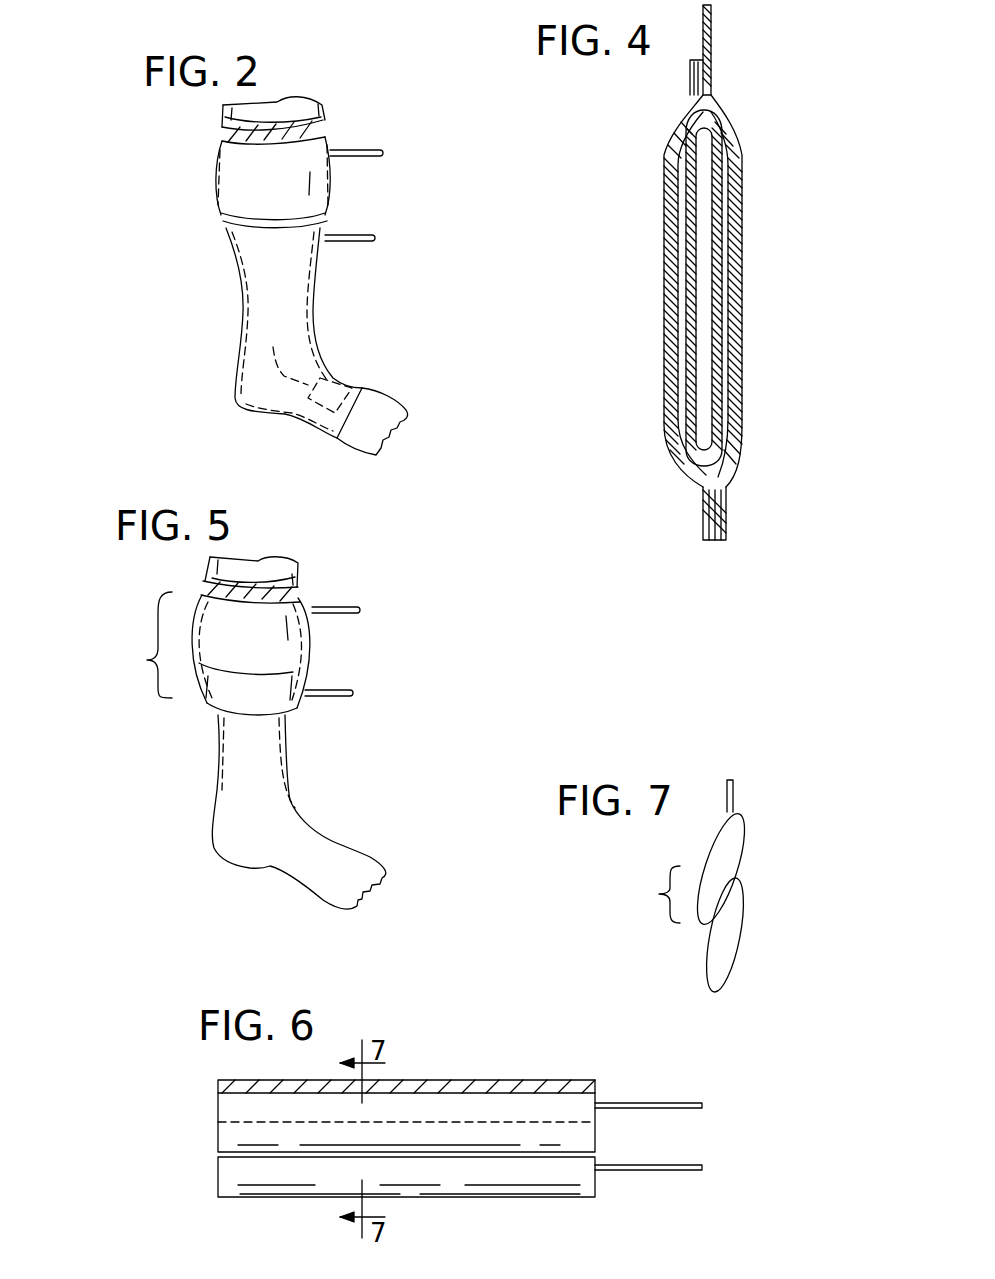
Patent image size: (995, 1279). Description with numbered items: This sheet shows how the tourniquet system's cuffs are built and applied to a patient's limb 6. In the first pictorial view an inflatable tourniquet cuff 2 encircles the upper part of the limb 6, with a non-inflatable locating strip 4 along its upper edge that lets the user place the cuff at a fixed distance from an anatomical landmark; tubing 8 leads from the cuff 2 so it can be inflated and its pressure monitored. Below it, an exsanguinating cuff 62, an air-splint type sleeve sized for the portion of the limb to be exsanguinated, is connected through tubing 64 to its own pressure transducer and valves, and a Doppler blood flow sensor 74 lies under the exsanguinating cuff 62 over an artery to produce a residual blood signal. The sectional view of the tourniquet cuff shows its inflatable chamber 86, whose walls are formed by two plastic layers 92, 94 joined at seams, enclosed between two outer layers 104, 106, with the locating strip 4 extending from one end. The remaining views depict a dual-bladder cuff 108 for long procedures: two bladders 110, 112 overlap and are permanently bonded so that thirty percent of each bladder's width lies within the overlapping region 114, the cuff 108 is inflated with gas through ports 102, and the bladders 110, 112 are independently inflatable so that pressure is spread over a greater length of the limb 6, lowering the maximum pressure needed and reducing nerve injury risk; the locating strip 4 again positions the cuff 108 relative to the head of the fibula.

In FIG. 2, the inflatable tourniquet cuff 2 is at (217, 150).
In FIG. 2, the locating strip 4 is at (325, 128).
In FIG. 4, the locating strip 4 is at (711, 30).
In FIG. 5, the locating strip 4 is at (300, 592).
In FIG. 7, the locating strip 4 is at (733, 790).
In FIG. 6, the locating strip 4 is at (218, 1087).
In FIG. 2, the limb 6 is at (402, 410).
In FIG. 2, the tubing 8 is at (383, 152).
In FIG. 5, the tubing 8 is at (360, 606).
In FIG. 2, the exsanguinating cuff 62 is at (233, 250).
In FIG. 2, the tubing 64 is at (375, 242).
In FIG. 2, the Doppler blood flow sensor 74 is at (305, 364).
In FIG. 4, the inflatable chamber 86 is at (704, 367).
In FIG. 4, the plastic layer 92 is at (686, 410).
In FIG. 4, the plastic layer 94 is at (742, 405).
In FIG. 6, the ports 102 is at (698, 1112).
In FIG. 4, the outer layer 104 is at (664, 311).
In FIG. 4, the outer layer 106 is at (742, 316).
In FIG. 5, the dual-bladder cuff 108 is at (147, 660).
In FIG. 5, the bladder 110 is at (303, 684).
In FIG. 7, the bladder 110 is at (740, 836).
In FIG. 6, the bladder 110 is at (218, 1185).
In FIG. 5, the bladder 112 is at (310, 637).
In FIG. 7, the bladder 112 is at (735, 920).
In FIG. 6, the bladder 112 is at (218, 1145).
In FIG. 7, the overlapping region 114 is at (706, 902).